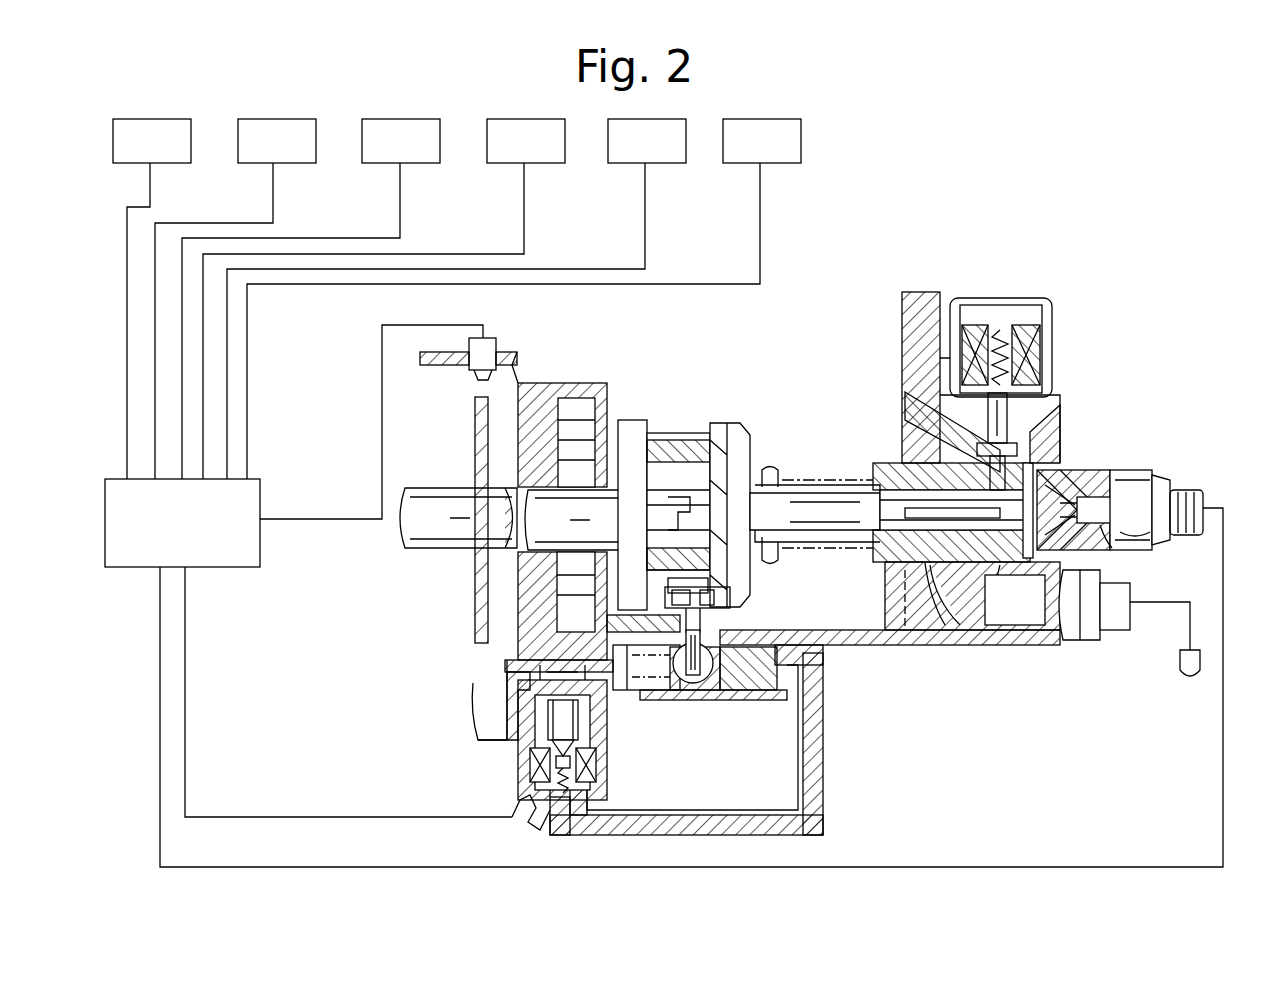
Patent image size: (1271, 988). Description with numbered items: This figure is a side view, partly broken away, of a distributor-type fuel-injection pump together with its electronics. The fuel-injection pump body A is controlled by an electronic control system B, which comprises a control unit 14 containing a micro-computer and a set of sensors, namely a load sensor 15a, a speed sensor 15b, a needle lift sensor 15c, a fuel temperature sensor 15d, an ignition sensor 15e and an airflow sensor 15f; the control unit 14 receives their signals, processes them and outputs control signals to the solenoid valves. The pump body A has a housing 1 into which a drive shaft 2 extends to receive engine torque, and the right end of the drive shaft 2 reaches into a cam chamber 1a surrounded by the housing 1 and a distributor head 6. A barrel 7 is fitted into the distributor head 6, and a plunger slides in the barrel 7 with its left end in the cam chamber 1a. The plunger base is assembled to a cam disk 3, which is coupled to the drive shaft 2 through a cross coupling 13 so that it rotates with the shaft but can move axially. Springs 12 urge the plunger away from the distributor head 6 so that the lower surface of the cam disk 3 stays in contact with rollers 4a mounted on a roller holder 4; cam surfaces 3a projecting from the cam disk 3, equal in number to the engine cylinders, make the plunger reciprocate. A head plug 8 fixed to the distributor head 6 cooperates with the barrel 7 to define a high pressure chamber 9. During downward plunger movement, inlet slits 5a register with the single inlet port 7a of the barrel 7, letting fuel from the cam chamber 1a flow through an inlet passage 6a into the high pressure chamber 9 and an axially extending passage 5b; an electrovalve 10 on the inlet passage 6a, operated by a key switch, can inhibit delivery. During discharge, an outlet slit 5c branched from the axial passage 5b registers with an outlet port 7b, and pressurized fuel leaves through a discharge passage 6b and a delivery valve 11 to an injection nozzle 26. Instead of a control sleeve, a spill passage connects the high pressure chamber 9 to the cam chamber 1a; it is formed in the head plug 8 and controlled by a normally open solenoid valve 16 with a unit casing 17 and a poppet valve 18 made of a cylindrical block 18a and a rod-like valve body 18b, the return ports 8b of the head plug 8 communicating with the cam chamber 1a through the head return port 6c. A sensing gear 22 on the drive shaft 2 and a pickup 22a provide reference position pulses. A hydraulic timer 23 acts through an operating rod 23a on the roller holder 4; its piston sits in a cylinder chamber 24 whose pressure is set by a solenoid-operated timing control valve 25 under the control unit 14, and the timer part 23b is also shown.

The load sensor 15a is at (152, 299).
The speed sensor 15b is at (235, 299).
The needle lift sensor 15c is at (311, 299).
The fuel temperature sensor 15d is at (384, 299).
The ignition sensor 15e is at (456, 299).
The airflow sensor 15f is at (524, 299).
The control unit 14 is at (168, 537).
The electronic control system B is at (262, 574).
The pickup 22a is at (490, 345).
The sensing gear 22 is at (480, 430).
The drive shaft 2 is at (445, 552).
The cam chamber 1a is at (850, 609).
The housing 1 is at (845, 650).
The roller holder 4 is at (684, 447).
The cross coupling 13 is at (668, 515).
The cam disk 3 is at (742, 447).
The cam surfaces 3a is at (712, 562).
The rollers 4a is at (735, 603).
The springs 12 is at (780, 468).
The axially extending passage 5b is at (897, 470).
The inlet slits 5a is at (1010, 630).
The outlet slit 5c is at (980, 625).
The head return port 6c is at (886, 632).
The outlet port 7b is at (932, 630).
The discharge passage 6b is at (965, 630).
The delivery valve 11 is at (1043, 630).
The high pressure chamber 9 is at (1005, 560).
The barrel 7 is at (878, 466).
The distributor head 6 is at (1055, 385).
The inlet passage 6a is at (912, 415).
The inlet port 7a is at (1058, 427).
The fuel-injection pump body A is at (1070, 390).
The electrovalve 10 is at (1048, 322).
The head plug 8 is at (1113, 475).
The return ports 8b is at (1075, 470).
The poppet valve 18 is at (1150, 516).
The unit casing 17 is at (1142, 470).
The solenoid valve 16 is at (1225, 464).
The cylindrical block 18a is at (1153, 532).
The rod-like valve body 18b is at (1105, 540).
The injection nozzle 26 is at (1190, 682).
The hydraulic timer 23 is at (692, 800).
The pump body 23b is at (748, 684).
The operating rod 23a is at (694, 684).
The cylinder chamber 24 is at (690, 678).
The solenoid-operated timing control valve 25 is at (530, 772).